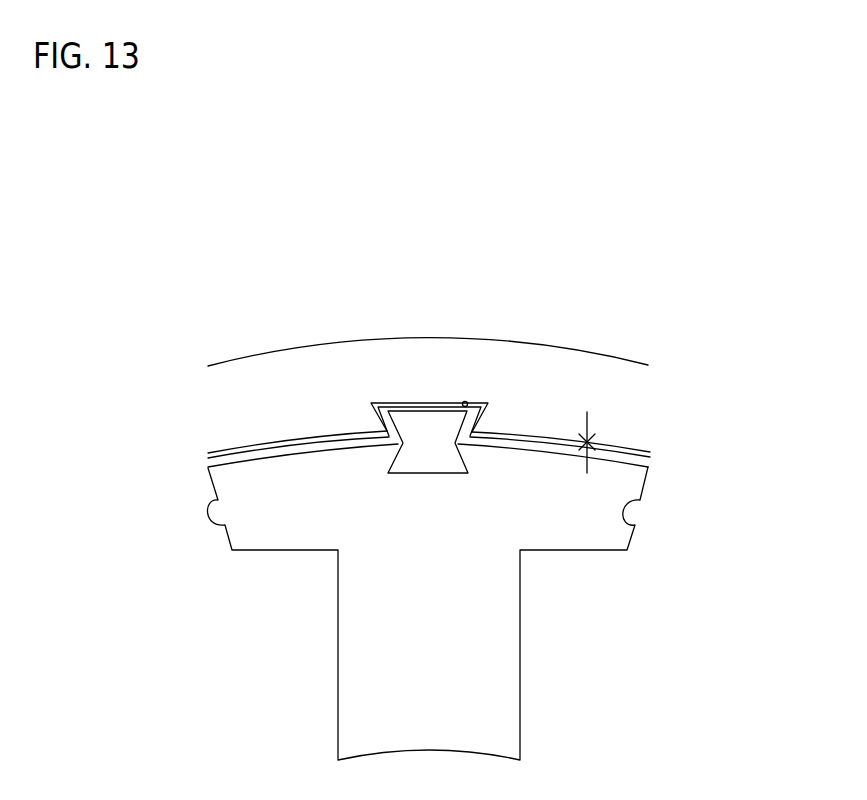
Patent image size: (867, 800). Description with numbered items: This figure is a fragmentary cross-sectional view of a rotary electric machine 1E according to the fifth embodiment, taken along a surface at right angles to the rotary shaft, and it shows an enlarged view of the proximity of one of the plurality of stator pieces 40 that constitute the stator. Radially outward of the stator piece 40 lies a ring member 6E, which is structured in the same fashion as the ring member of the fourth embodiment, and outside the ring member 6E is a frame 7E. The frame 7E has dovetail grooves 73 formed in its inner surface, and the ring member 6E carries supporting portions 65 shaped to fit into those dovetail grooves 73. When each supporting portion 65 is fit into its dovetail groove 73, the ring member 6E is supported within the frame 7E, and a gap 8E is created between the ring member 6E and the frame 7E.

The rotary electric machine 1E is at (422, 226).
The frame 7E is at (543, 363).
The dovetail groove 73 is at (468, 403).
The supporting portion 65 is at (408, 400).
The ring member 6E is at (650, 462).
The gap 8E is at (587, 442).
The stator piece 40 is at (614, 531).